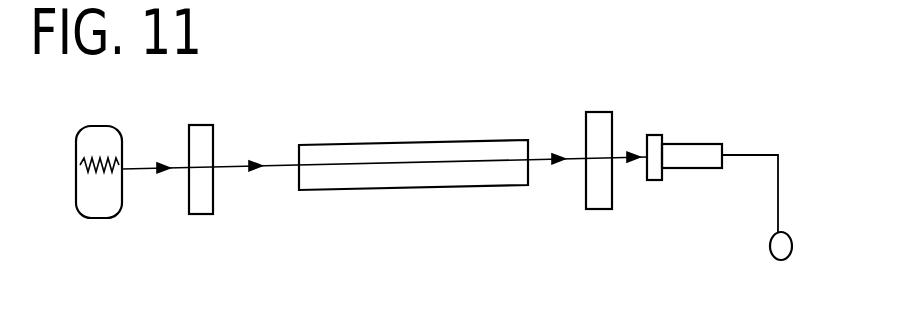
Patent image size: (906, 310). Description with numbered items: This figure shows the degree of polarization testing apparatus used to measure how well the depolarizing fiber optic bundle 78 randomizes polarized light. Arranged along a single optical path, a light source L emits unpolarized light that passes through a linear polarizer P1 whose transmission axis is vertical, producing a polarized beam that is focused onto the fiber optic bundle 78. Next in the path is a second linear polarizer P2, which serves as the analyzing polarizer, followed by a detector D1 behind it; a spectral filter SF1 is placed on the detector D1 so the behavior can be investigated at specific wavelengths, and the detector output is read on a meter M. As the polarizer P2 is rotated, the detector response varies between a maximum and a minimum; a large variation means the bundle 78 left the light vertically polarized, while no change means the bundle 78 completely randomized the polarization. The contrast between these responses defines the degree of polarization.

The fiber optic bundle 78 is at (428, 140).
The lamp L is at (99, 187).
The linear polarizer P1 is at (203, 186).
The linear polarizer P2 is at (601, 180).
The spectral filter SF1 is at (658, 144).
The detector D1 is at (692, 172).
The meter M is at (757, 230).